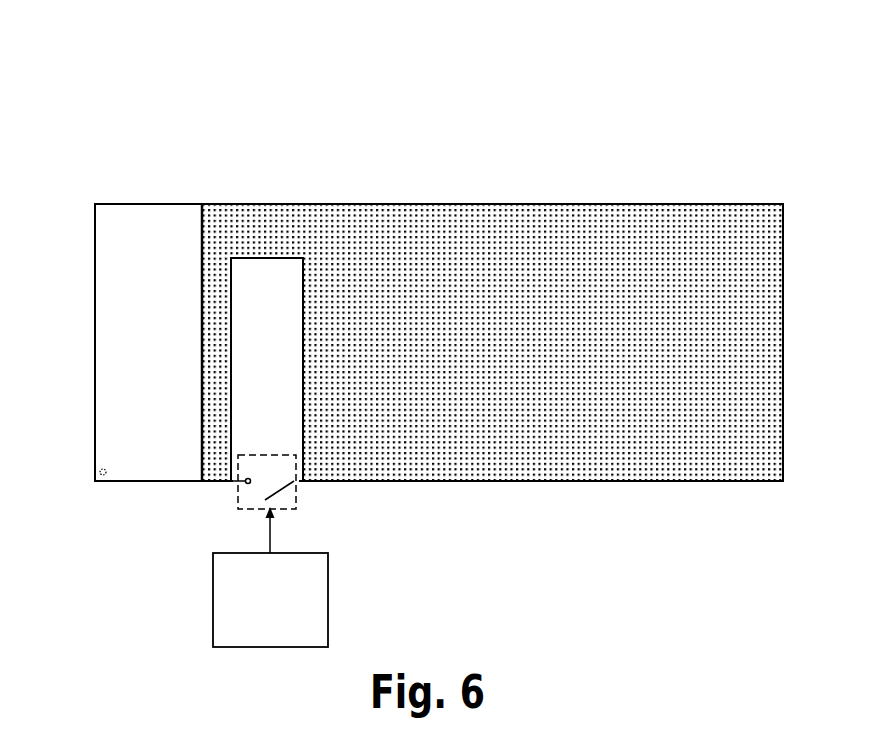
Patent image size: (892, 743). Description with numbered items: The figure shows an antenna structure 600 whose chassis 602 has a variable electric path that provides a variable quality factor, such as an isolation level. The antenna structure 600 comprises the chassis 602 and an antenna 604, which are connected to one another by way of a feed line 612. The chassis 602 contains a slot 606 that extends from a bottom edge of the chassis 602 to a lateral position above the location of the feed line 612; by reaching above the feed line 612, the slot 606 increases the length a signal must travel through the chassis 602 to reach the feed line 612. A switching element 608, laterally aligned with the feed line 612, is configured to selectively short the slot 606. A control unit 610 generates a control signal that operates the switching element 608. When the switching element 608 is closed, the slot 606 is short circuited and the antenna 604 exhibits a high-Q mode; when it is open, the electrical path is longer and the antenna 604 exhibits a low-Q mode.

The antenna structure 600 is at (63, 133).
The chassis 602 is at (475, 204).
The antenna 604 is at (148, 204).
The slot 606 is at (311, 503).
The switching element 608 is at (248, 510).
The control unit 610 is at (250, 637).
The feed line 612 is at (106, 457).